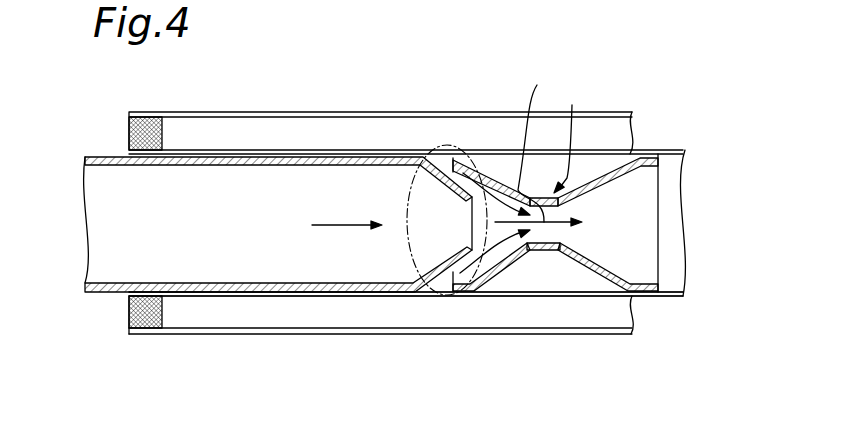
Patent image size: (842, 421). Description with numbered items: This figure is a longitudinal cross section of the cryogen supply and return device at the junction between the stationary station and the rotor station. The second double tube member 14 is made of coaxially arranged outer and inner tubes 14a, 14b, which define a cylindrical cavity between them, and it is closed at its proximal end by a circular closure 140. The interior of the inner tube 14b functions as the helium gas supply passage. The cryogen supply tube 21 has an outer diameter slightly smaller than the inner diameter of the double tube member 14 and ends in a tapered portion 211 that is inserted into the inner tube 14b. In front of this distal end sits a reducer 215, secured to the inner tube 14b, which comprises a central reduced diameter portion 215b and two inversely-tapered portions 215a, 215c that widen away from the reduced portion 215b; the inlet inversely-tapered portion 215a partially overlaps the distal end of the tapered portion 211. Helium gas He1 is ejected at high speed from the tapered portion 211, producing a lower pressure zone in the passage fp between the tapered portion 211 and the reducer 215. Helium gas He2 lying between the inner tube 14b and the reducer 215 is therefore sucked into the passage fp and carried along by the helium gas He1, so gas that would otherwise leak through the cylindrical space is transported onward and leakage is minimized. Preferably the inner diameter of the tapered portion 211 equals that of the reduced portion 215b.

The second double tube member 14 is at (338, 334).
The outer tube 14a is at (437, 334).
The inner tube 14b is at (550, 292).
The circular closure 140 is at (128, 313).
The cryogen supply tube 21 is at (183, 284).
The tapered portion 211 is at (439, 148).
The reducer 215 is at (658, 178).
The inversely-tapered portion 215a is at (494, 163).
The central reduced diameter portion 215b is at (572, 192).
The inversely-tapered portion 215c is at (590, 287).
The passage fp is at (482, 267).
The helium gas He1 is at (576, 135).
The helium gas He2 is at (535, 140).